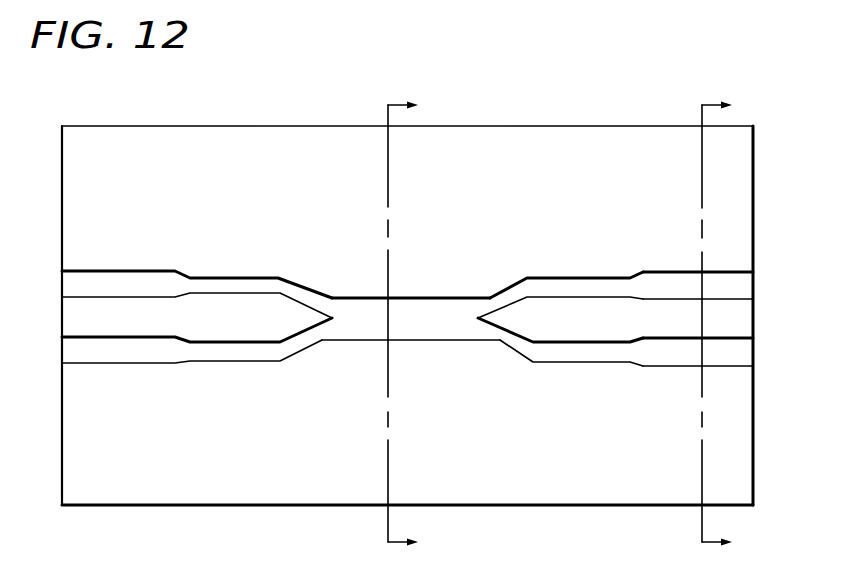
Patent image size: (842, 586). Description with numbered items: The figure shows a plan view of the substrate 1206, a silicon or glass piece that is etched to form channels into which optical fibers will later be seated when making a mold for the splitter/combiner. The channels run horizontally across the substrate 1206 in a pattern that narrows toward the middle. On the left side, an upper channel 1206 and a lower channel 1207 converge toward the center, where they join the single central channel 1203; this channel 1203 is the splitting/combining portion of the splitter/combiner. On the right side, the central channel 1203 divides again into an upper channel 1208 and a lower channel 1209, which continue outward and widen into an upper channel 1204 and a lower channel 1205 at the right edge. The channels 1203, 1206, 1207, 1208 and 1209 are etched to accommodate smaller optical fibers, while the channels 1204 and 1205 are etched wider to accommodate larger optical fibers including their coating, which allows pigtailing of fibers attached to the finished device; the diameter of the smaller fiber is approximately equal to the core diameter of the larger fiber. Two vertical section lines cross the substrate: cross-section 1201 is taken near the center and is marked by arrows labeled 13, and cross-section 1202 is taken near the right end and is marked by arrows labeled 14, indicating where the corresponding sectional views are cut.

The cross-section 1201 is at (344, 312).
The cross-section 1202 is at (658, 311).
The channel 1203 is at (430, 303).
The channel 1204 is at (678, 272).
The channel 1205 is at (660, 365).
The substrate 1206 is at (198, 541).
The channel 1207 is at (243, 363).
The channel 1208 is at (572, 278).
The channel 1209 is at (555, 362).
The section arrow for FIG. 13 is at (417, 325).
The section arrow for FIG. 14 is at (730, 325).